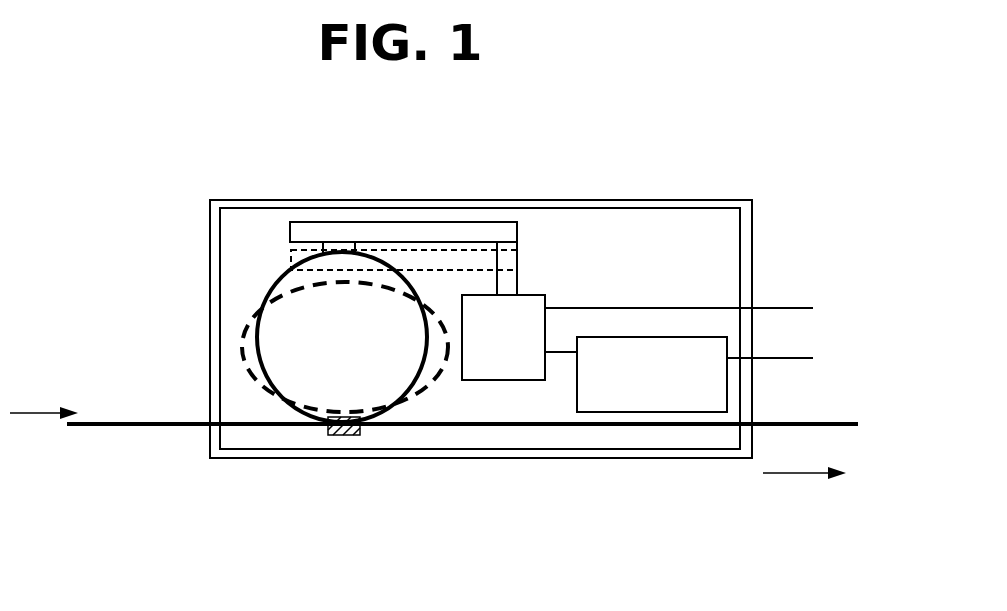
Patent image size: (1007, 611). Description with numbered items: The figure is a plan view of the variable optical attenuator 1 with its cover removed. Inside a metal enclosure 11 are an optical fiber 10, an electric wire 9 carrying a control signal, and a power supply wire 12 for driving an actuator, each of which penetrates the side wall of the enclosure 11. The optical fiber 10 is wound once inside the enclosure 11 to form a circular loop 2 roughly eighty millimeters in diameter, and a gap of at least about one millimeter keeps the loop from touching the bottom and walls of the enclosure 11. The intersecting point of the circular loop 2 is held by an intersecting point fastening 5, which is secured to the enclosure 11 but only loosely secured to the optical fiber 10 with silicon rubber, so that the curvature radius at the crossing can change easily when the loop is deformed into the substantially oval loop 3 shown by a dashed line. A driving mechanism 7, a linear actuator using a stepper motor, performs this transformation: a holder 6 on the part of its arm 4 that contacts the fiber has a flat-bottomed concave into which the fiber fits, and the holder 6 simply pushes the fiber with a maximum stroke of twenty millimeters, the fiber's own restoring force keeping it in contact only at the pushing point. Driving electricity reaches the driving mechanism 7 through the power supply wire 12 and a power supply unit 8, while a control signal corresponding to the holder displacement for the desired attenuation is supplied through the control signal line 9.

The variable optical attenuator 1 is at (129, 198).
The circular loop 2 is at (278, 280).
The oval loop 3 is at (243, 352).
The arm 4 is at (418, 242).
The intersecting point fastening 5 is at (350, 435).
The holder 6 is at (333, 248).
The driving mechanism 7 is at (527, 310).
The power supply unit 8 is at (618, 400).
The electric wire for control signal 9 is at (773, 307).
The optical fiber 10 is at (132, 428).
The metal enclosure 11 is at (223, 458).
The power supply wire 12 is at (790, 354).